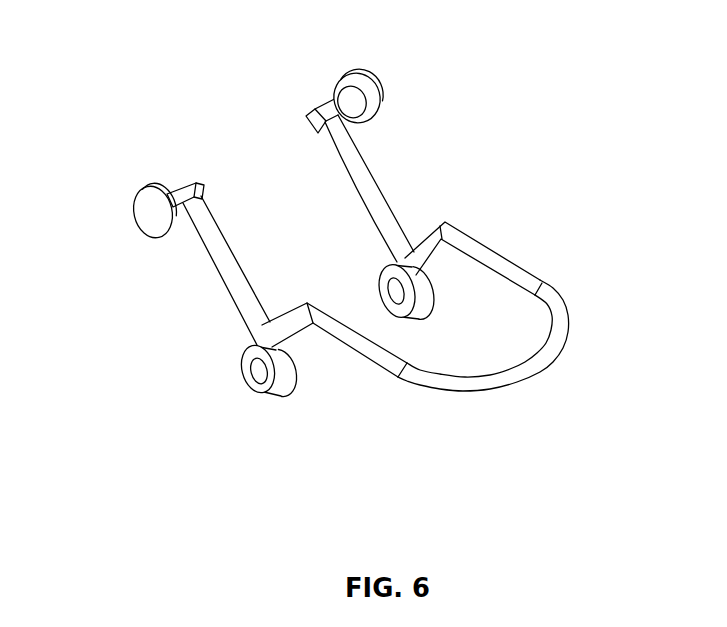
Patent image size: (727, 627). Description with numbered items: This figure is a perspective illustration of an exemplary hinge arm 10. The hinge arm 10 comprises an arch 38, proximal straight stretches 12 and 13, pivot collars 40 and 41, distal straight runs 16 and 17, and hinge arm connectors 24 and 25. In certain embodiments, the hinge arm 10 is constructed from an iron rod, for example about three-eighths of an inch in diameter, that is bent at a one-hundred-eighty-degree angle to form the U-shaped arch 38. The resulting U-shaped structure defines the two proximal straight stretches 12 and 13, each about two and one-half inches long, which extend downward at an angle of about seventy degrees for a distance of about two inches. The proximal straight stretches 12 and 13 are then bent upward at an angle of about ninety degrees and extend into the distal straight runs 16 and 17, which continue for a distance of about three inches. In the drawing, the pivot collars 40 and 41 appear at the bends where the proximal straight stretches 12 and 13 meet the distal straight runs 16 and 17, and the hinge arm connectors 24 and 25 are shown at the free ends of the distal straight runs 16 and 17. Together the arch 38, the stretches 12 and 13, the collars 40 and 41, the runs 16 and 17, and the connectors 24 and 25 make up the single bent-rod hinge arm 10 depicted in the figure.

The hinge arm 10 is at (613, 50).
The proximal straight stretch 12 is at (360, 347).
The proximal straight stretch 13 is at (495, 258).
The arch 38 is at (543, 352).
The distal straight run 16 is at (362, 177).
The distal straight run 17 is at (228, 263).
The hinge arm connector 24 is at (372, 115).
The hinge arm connector 25 is at (155, 212).
The pivot collar 40 is at (260, 388).
The pivot collar 41 is at (388, 298).